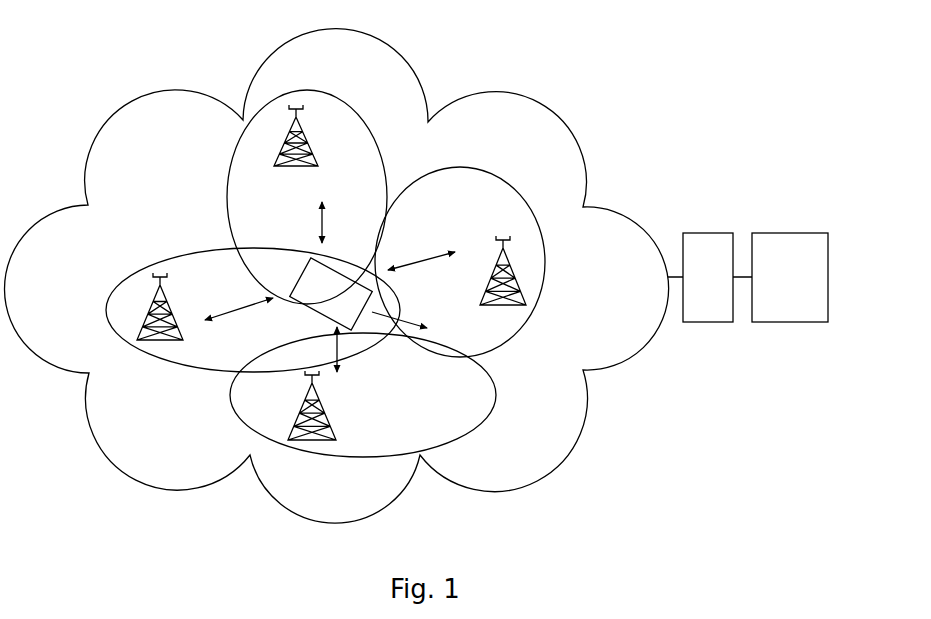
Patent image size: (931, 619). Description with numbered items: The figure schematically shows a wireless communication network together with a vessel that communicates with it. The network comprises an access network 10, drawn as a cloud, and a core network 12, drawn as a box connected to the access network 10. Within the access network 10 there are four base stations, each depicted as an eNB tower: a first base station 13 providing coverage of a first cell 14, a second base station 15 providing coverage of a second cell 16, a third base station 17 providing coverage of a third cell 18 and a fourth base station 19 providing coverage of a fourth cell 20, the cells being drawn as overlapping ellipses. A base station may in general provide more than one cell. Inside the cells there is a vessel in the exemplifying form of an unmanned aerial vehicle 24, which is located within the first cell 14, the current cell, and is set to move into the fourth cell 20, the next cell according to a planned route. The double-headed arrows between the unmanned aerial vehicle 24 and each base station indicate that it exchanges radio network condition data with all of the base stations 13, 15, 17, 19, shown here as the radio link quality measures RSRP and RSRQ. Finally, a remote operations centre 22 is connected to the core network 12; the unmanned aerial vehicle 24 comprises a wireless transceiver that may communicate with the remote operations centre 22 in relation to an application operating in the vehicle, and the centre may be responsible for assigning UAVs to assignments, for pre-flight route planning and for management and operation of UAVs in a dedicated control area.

The access network 10 is at (577, 157).
The core network 12 is at (708, 233).
The first base station 13 is at (180, 330).
The first cell 14 is at (178, 253).
The second base station 15 is at (318, 143).
The second cell 16 is at (395, 160).
The third base station 17 is at (337, 428).
The third cell 18 is at (483, 420).
The fourth base station 19 is at (490, 280).
The fourth cell 20 is at (521, 196).
The remote operations centre 22 is at (790, 233).
The unmanned aerial vehicle 24 is at (297, 277).